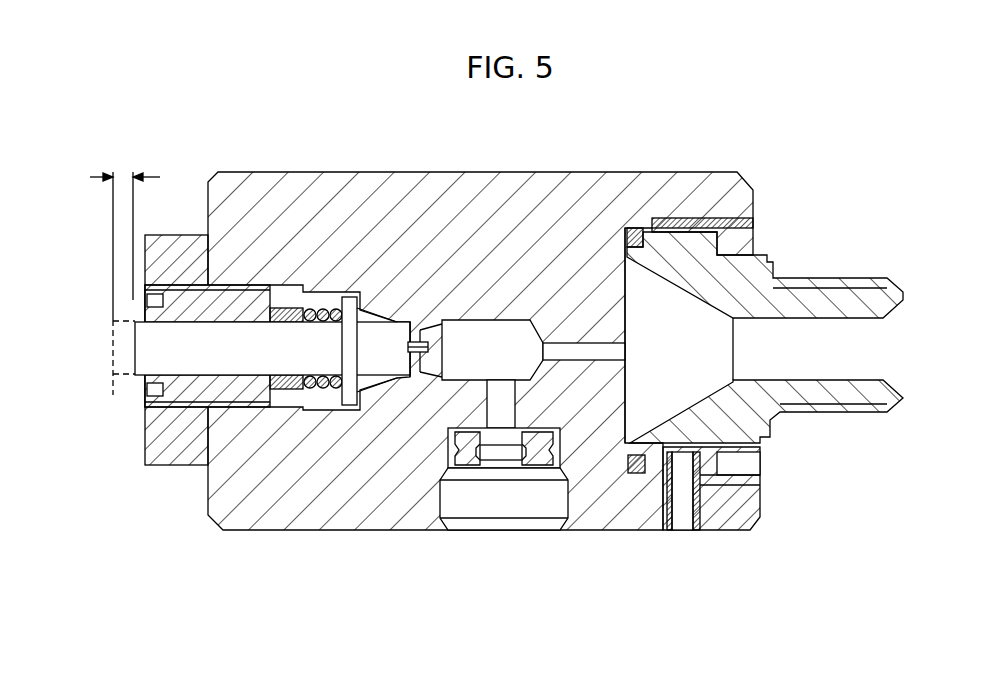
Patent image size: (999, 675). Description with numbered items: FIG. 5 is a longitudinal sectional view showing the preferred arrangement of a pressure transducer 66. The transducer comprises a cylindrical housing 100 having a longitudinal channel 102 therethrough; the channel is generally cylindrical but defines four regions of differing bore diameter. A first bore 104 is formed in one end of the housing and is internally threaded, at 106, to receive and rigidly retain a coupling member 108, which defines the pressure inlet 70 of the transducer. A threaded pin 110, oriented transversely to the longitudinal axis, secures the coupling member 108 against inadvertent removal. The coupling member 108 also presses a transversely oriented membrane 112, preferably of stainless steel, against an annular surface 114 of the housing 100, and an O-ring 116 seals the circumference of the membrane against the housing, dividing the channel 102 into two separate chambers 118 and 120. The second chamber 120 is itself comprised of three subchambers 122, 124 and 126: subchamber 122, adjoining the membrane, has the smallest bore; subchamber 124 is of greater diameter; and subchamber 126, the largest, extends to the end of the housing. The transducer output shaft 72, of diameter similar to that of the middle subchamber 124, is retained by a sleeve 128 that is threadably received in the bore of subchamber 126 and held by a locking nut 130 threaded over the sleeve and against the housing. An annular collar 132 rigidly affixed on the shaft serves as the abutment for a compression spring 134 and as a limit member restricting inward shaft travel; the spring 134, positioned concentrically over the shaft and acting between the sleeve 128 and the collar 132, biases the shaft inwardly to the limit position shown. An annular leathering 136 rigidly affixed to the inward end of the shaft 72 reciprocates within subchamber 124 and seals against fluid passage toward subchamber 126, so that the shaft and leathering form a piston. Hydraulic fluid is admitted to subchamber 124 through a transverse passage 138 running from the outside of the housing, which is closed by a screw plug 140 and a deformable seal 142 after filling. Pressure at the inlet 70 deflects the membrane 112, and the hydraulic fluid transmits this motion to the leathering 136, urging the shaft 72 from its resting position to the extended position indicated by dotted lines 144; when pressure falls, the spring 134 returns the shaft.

The pressure transducer 66 is at (754, 162).
The pressure inlet 70 is at (910, 350).
The transducer output shaft 72 is at (158, 357).
The cylindrical housing 100 is at (592, 178).
The longitudinal channel 102 is at (112, 348).
The first bore 104 is at (745, 460).
The internal thread 106 is at (753, 237).
The coupling member 108 is at (775, 400).
The threaded pin 110 is at (683, 463).
The membrane 112 is at (660, 300).
The annular surface 114 is at (637, 229).
The O-ring 116 is at (638, 474).
The first chamber 118 is at (705, 330).
The second chamber 120 is at (473, 343).
The first subchamber 122 is at (572, 360).
The second subchamber 124 is at (502, 333).
The third subchamber 126 is at (323, 395).
The sleeve 128 is at (253, 388).
The locking nut 130 is at (185, 240).
The annular collar 132 is at (352, 398).
The spring 134 is at (305, 290).
The annular leathering 136 is at (397, 313).
The transverse passage 138 is at (530, 452).
The screw plug 140 is at (490, 482).
The deformable seal 142 is at (460, 435).
The dotted lines 144 is at (113, 380).